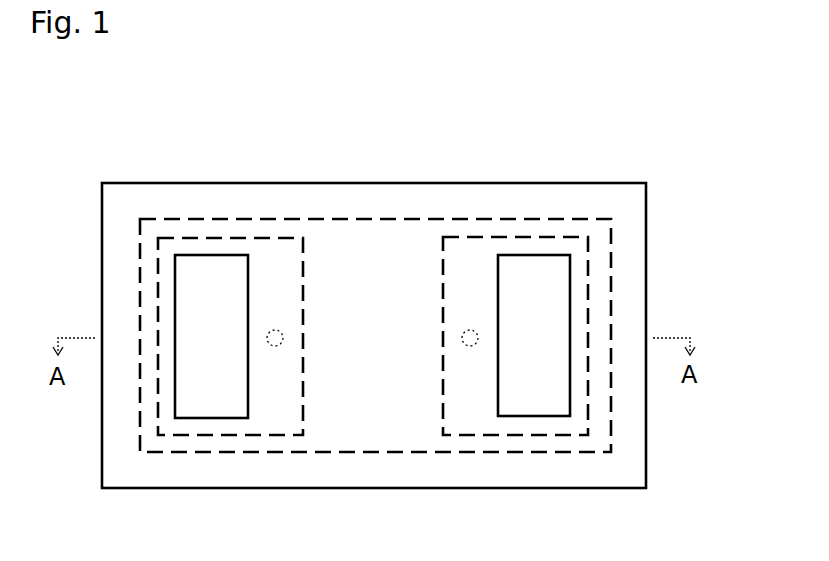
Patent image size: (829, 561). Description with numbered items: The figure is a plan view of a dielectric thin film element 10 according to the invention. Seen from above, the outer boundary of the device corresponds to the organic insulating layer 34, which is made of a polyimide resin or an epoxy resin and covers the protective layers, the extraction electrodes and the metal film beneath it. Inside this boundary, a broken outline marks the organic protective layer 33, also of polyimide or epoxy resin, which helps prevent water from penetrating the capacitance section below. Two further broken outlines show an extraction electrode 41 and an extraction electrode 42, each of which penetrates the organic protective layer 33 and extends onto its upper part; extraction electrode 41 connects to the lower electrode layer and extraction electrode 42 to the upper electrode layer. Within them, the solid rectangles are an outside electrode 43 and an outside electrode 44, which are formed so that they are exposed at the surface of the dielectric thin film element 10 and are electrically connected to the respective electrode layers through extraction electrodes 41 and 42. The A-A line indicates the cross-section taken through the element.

The dielectric thin film element 10 is at (92, 104).
The organic protective layer 33 is at (613, 382).
The organic insulating layer 34 is at (648, 430).
The extraction electrode 41 is at (200, 236).
The extraction electrode 42 is at (517, 236).
The outside electrode 43 is at (222, 347).
The outside electrode 44 is at (537, 343).